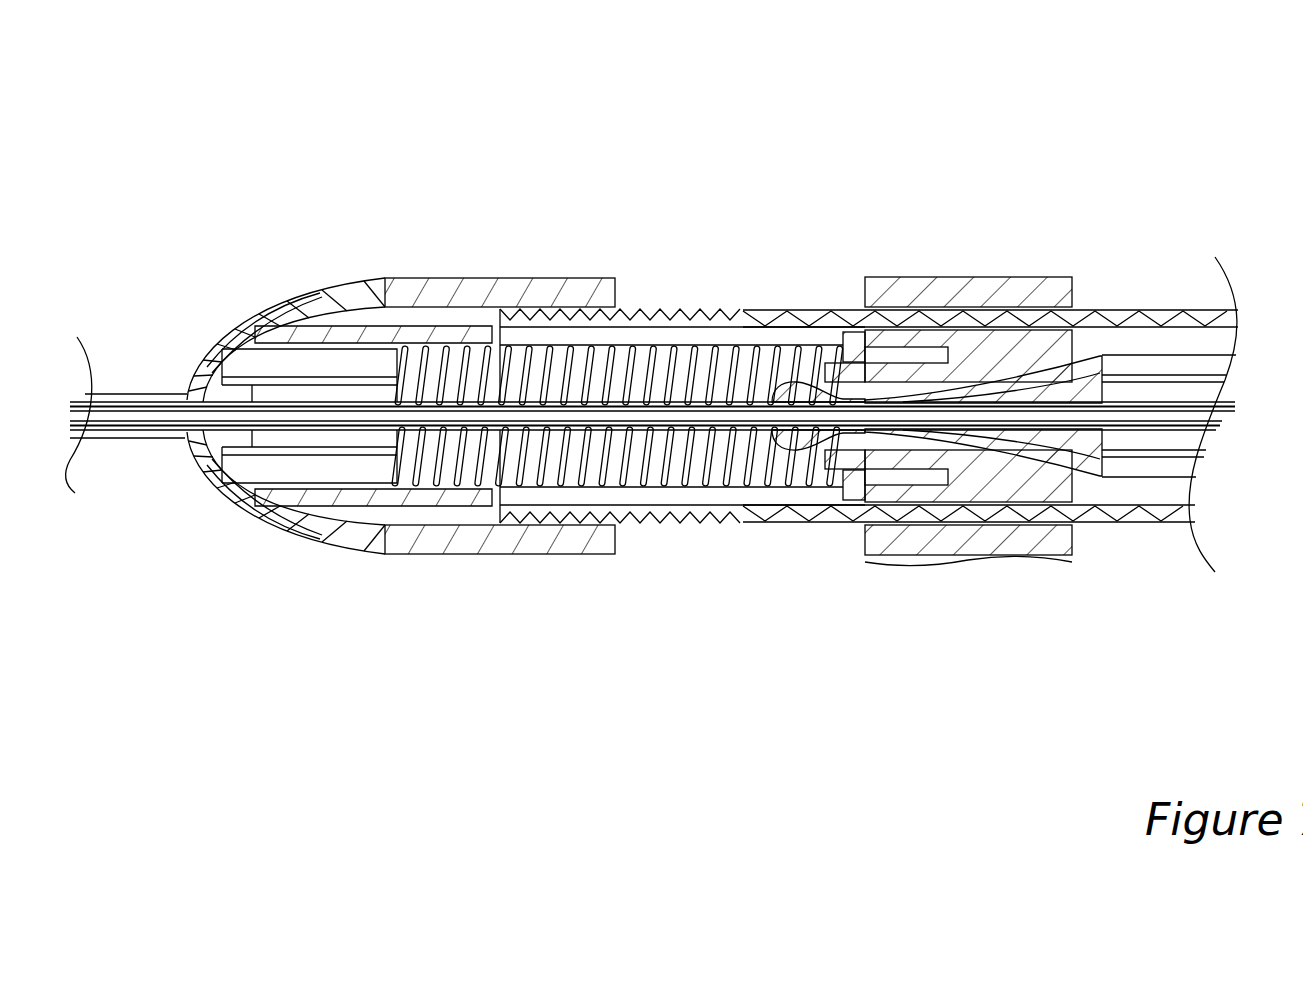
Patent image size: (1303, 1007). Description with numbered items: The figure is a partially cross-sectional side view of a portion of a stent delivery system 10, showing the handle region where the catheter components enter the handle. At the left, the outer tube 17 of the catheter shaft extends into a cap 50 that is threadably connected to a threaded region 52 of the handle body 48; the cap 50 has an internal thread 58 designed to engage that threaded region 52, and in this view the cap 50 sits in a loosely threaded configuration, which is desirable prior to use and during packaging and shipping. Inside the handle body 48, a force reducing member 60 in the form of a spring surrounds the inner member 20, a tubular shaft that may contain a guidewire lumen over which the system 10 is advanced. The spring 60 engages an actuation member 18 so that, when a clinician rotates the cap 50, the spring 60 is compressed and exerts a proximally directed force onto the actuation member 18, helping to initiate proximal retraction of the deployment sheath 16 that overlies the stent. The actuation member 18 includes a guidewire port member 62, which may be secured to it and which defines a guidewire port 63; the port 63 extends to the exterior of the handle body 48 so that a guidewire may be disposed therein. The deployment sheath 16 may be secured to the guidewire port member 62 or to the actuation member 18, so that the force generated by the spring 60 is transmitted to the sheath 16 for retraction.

The stent delivery system 10 is at (420, 128).
The deployment sheath 16 is at (280, 432).
The outer tube 17 is at (155, 392).
The actuation member 18 is at (960, 268).
The inner member 20 is at (1180, 423).
The handle body 48 is at (1120, 312).
The cap 50 is at (378, 280).
The threaded region 52 is at (672, 318).
The internal thread 58 is at (527, 520).
The force reducing member 60 is at (665, 467).
The guidewire port member 62 is at (801, 455).
The guidewire port 63 is at (1087, 447).